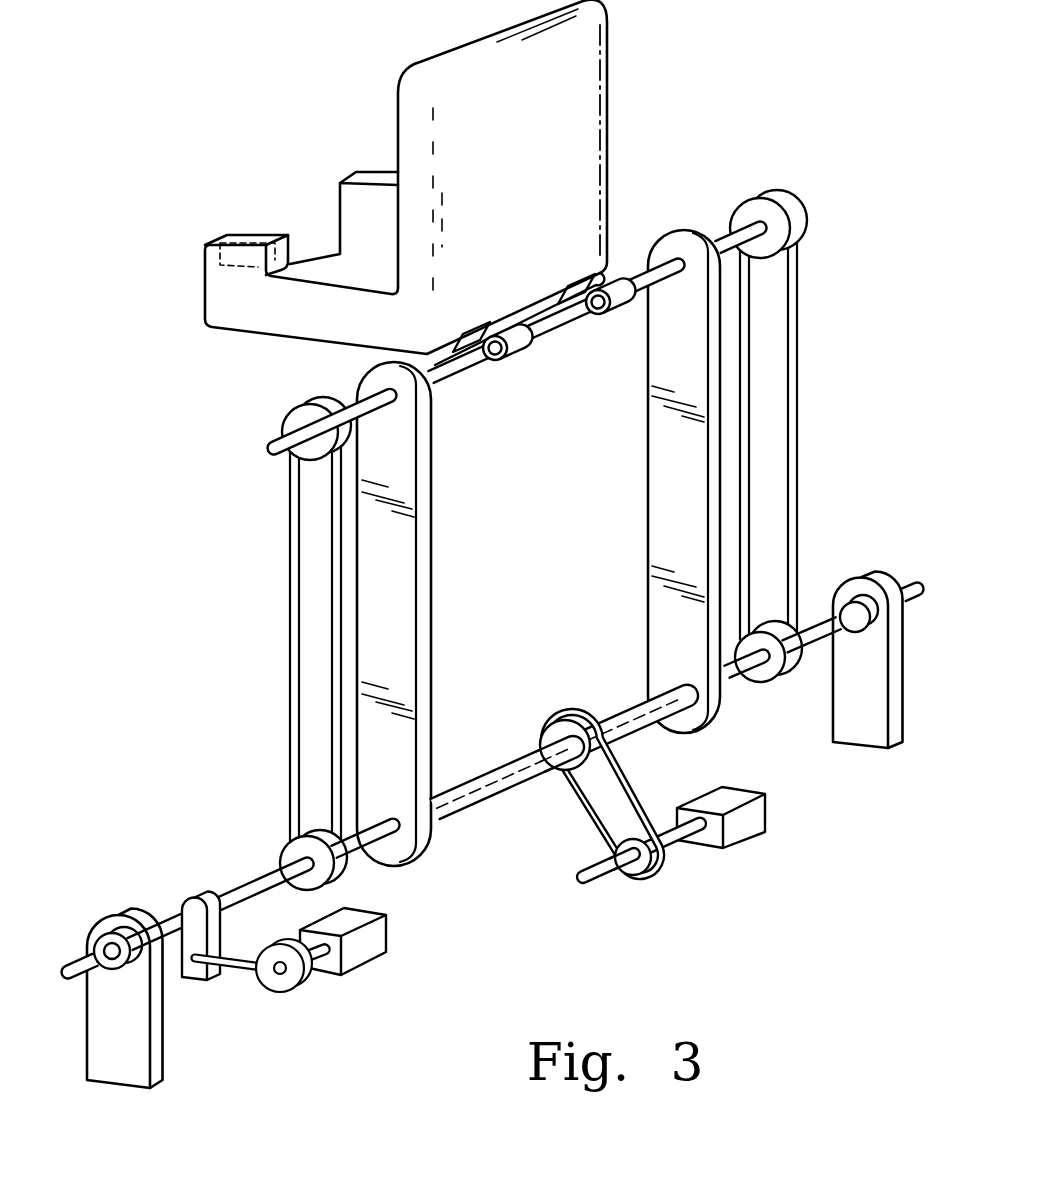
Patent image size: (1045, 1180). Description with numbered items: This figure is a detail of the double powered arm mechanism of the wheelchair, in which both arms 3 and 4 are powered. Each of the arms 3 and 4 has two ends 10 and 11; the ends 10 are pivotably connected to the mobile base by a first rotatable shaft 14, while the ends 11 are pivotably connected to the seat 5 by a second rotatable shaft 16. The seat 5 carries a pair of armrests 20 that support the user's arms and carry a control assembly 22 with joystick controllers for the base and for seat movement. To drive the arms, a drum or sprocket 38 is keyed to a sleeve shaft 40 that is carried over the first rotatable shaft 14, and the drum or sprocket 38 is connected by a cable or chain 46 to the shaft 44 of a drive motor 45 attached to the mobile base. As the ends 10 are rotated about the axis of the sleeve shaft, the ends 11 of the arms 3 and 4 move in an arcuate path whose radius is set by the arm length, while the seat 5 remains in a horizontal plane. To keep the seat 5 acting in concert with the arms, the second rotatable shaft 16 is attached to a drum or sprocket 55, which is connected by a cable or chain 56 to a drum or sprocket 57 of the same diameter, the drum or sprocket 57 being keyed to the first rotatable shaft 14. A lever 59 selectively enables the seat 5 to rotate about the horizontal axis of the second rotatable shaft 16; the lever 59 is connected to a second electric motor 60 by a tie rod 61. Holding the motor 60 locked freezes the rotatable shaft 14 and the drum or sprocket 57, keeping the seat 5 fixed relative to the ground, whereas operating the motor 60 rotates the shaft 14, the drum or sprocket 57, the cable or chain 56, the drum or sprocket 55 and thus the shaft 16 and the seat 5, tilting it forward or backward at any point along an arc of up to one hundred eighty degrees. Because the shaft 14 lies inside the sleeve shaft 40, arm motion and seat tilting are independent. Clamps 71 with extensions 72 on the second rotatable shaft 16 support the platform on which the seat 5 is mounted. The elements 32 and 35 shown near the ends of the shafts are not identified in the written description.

The arm 3 is at (411, 590).
The arm 4 is at (673, 467).
The seat 5 is at (584, 106).
The end 10 is at (431, 847).
The end 11 is at (427, 422).
The rotatable shaft 14 is at (247, 888).
The second rotatable shaft 16 is at (631, 278).
The armrests 20 is at (328, 281).
The control assembly 22 is at (210, 256).
The support bracket 32 is at (857, 731).
The bearing 35 is at (117, 937).
The drum or sprocket 38 is at (558, 722).
The sleeve shaft 40 is at (507, 760).
The shaft 44 is at (588, 885).
The drive motor 45 is at (743, 823).
The cable or chain 46 is at (587, 817).
The drum or sprocket 55 is at (288, 424).
The cable or chain 56 is at (297, 634).
The drum or sprocket 57 is at (290, 854).
The lever 59 is at (191, 980).
The second electric motor 60 is at (367, 947).
The tie rod 61 is at (240, 973).
The clamps 71 is at (513, 360).
The extension 72 is at (576, 291).